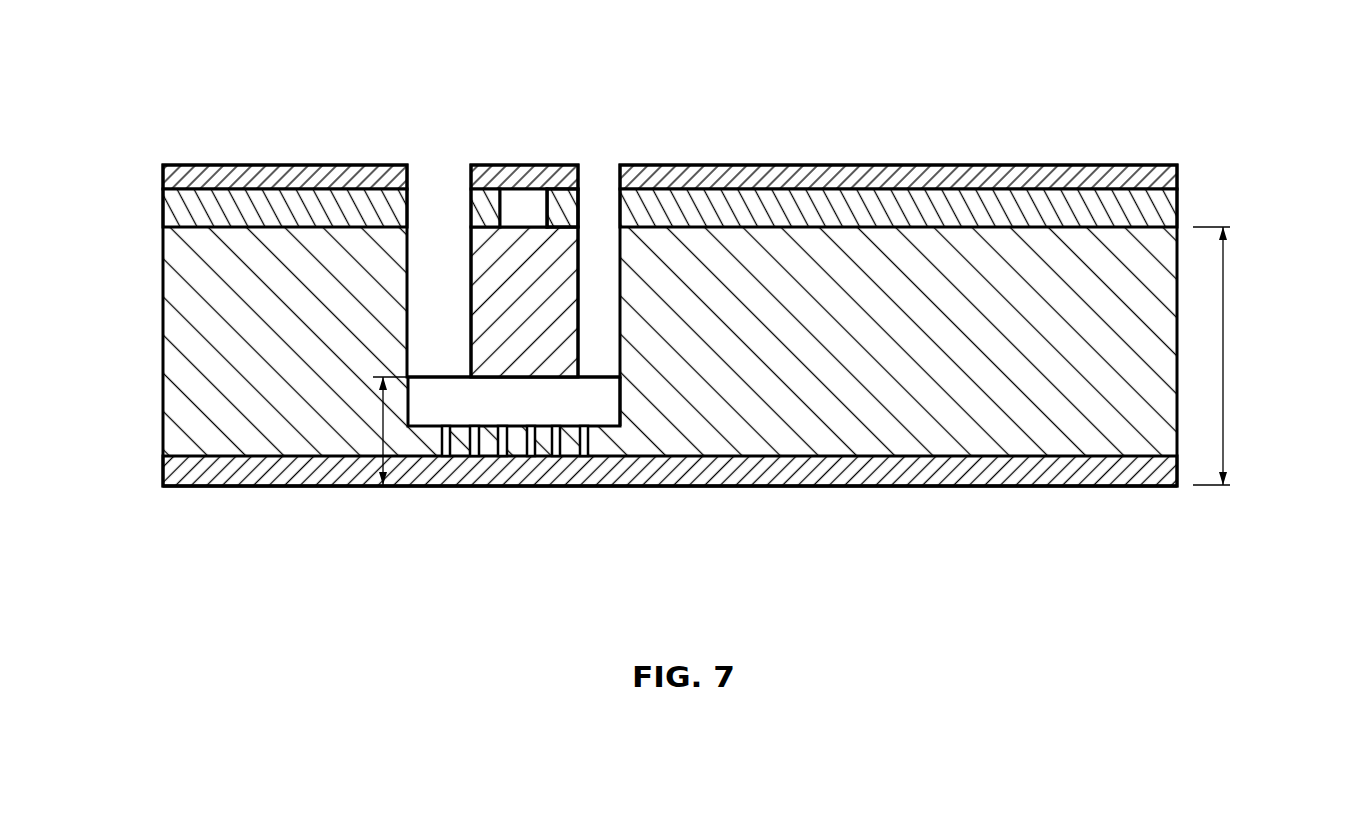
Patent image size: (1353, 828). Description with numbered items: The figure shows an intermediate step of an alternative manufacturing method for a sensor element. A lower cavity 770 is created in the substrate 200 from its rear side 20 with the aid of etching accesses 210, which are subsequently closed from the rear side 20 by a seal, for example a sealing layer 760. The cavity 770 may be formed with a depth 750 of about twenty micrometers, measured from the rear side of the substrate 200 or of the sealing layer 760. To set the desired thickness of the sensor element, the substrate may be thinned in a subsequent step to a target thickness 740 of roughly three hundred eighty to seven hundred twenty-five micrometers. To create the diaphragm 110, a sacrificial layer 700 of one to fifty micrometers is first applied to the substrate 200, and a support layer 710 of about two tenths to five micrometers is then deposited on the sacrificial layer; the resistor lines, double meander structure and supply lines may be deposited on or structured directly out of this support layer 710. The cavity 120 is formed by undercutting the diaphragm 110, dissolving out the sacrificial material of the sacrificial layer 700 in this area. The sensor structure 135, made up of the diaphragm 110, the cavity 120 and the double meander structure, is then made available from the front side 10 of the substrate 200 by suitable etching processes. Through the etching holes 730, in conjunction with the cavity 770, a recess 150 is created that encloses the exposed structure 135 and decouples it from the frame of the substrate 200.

The front side 10 is at (247, 138).
The rear side 20 is at (285, 511).
The diaphragm 110 is at (566, 192).
The cavity 120 is at (535, 203).
The sensor structure 135 is at (488, 263).
The recess 150 is at (460, 303).
The substrate 200 is at (165, 256).
The etching accesses 210 is at (584, 448).
The sacrificial layer 700 is at (1165, 208).
The support layer 710 is at (1013, 177).
The etching holes 730 is at (429, 223).
The target thickness 740 is at (1225, 338).
The depth 750 is at (386, 428).
The sealing layer 760 is at (185, 473).
The lower cavity 770 is at (540, 418).